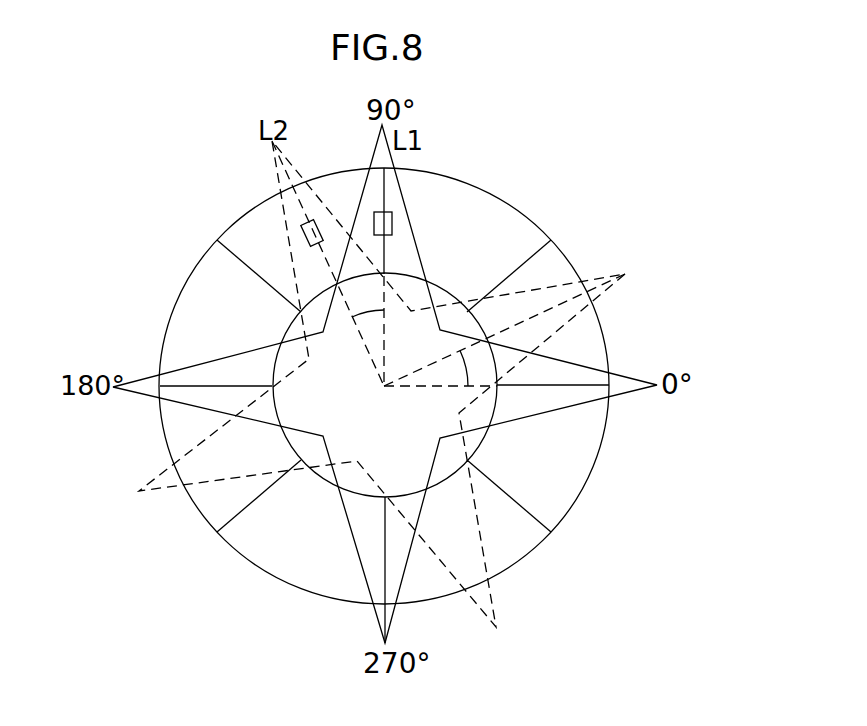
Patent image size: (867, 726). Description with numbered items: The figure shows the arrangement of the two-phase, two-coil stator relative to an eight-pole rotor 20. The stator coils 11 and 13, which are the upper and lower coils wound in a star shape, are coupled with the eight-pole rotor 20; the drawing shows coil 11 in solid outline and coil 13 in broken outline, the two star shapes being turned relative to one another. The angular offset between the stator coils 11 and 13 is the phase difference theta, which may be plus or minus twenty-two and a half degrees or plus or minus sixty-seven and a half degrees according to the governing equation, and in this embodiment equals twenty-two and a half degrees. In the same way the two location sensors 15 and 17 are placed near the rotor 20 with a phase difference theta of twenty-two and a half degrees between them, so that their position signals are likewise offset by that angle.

The upper coil L1 11 is at (637, 380).
The lower coil L2 13 is at (625, 276).
The location sensor H1 15 is at (302, 228).
The location sensor H2 17 is at (392, 220).
The 8-pole rotor 20 is at (573, 220).